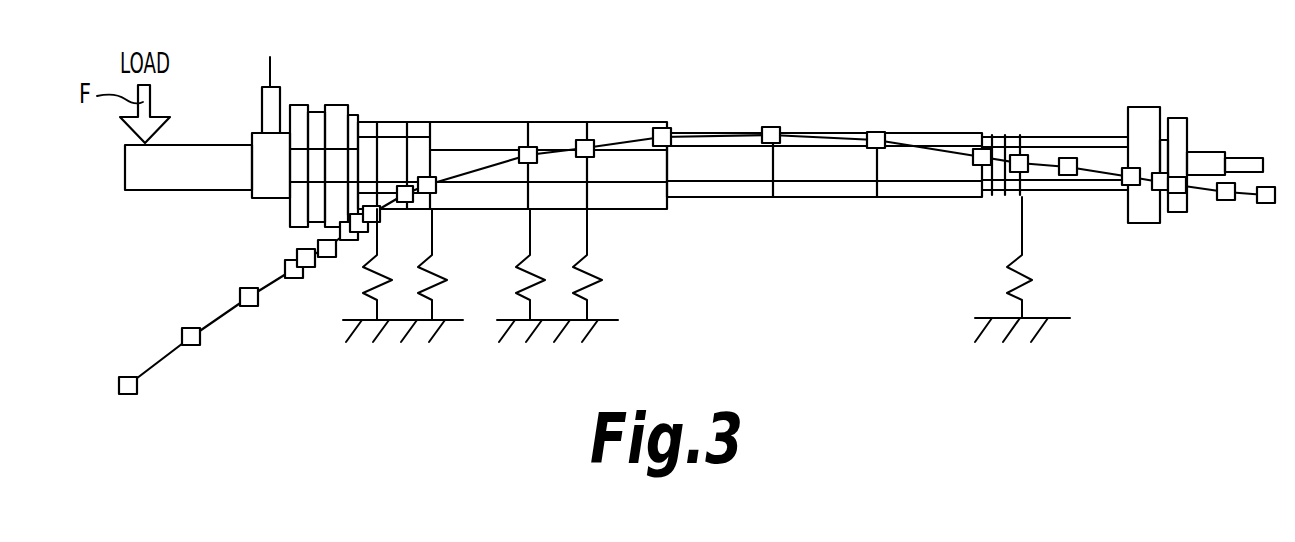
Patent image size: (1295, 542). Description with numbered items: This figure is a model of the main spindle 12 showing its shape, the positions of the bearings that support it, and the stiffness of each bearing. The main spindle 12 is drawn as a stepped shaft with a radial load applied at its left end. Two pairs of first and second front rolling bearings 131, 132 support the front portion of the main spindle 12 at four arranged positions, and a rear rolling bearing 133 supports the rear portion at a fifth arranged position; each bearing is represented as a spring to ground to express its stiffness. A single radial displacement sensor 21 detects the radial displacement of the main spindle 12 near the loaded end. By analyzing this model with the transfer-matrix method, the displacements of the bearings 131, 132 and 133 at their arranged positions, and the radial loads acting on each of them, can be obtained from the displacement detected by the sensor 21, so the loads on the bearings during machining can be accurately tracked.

The main spindle 12 is at (480, 122).
The radial displacement sensor 21 is at (278, 90).
The first front rolling bearings 131 is at (427, 287).
The second front rolling bearings 132 is at (583, 287).
The rear rolling bearing 133 is at (1032, 280).